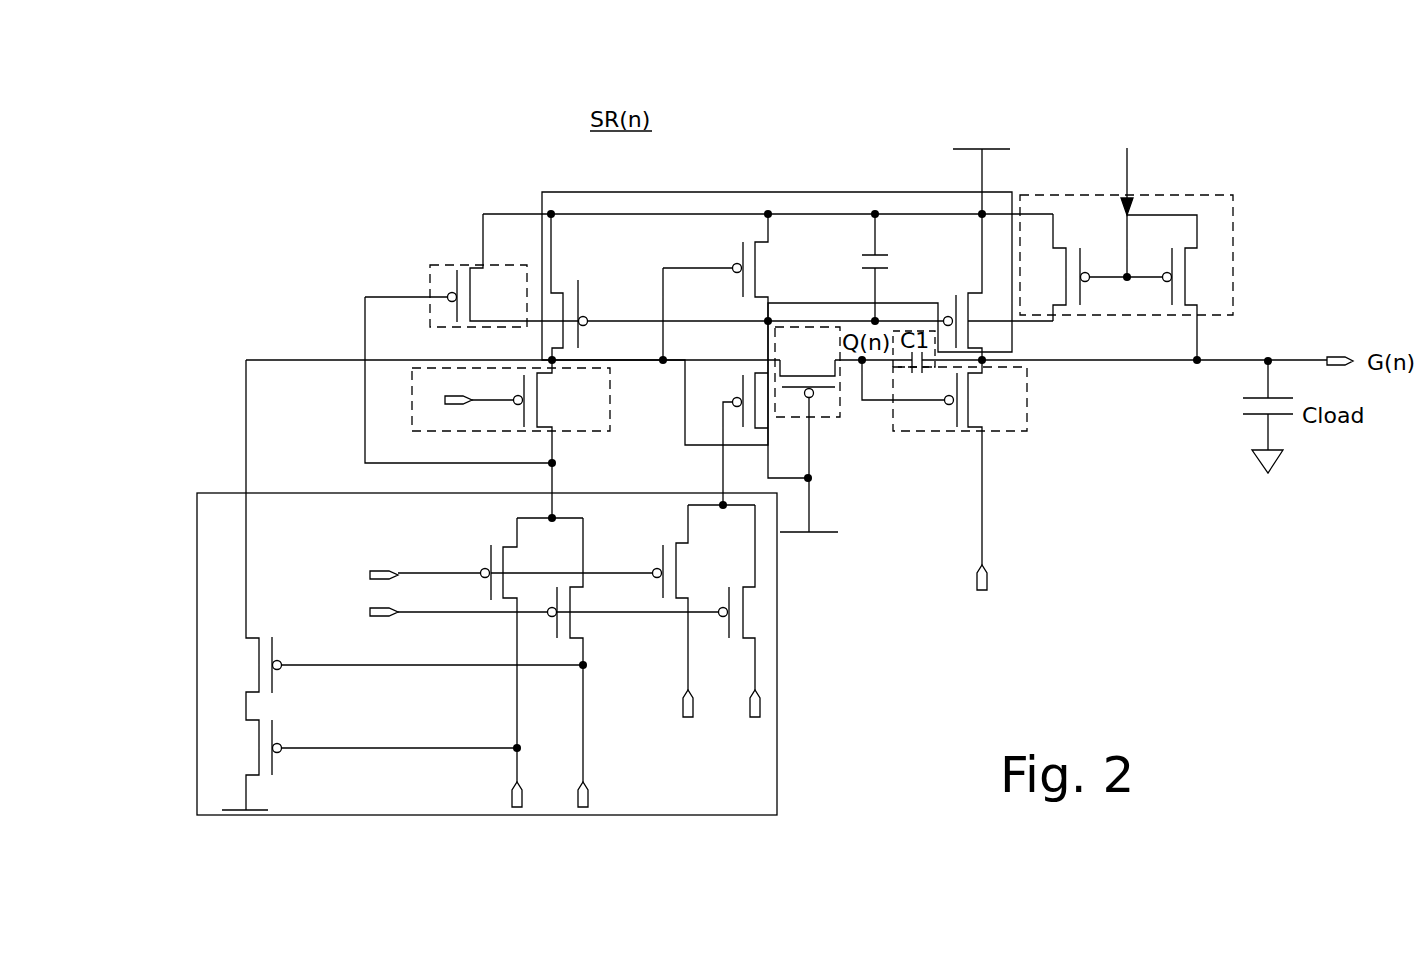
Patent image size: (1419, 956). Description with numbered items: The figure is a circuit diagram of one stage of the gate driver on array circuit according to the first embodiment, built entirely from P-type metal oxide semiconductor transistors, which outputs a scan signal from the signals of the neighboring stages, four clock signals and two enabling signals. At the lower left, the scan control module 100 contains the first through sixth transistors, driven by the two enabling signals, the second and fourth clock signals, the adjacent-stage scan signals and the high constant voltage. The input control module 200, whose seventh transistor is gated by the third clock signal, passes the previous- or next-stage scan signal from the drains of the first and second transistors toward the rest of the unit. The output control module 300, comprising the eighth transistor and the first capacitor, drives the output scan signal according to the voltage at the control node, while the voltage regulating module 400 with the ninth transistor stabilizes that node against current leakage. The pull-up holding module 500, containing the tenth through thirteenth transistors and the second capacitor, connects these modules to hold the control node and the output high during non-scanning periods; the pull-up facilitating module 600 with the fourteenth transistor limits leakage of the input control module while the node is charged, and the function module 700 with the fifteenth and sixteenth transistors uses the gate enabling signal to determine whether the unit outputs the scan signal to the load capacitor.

The scan control module 100 is at (228, 493).
The input control module 200 is at (412, 405).
The output control module 300 is at (1003, 433).
The voltage regulating module 400 is at (817, 418).
The pull-up holding module 500 is at (542, 197).
The pull-up facilitating module 600 is at (430, 272).
The function module 700 is at (1103, 197).